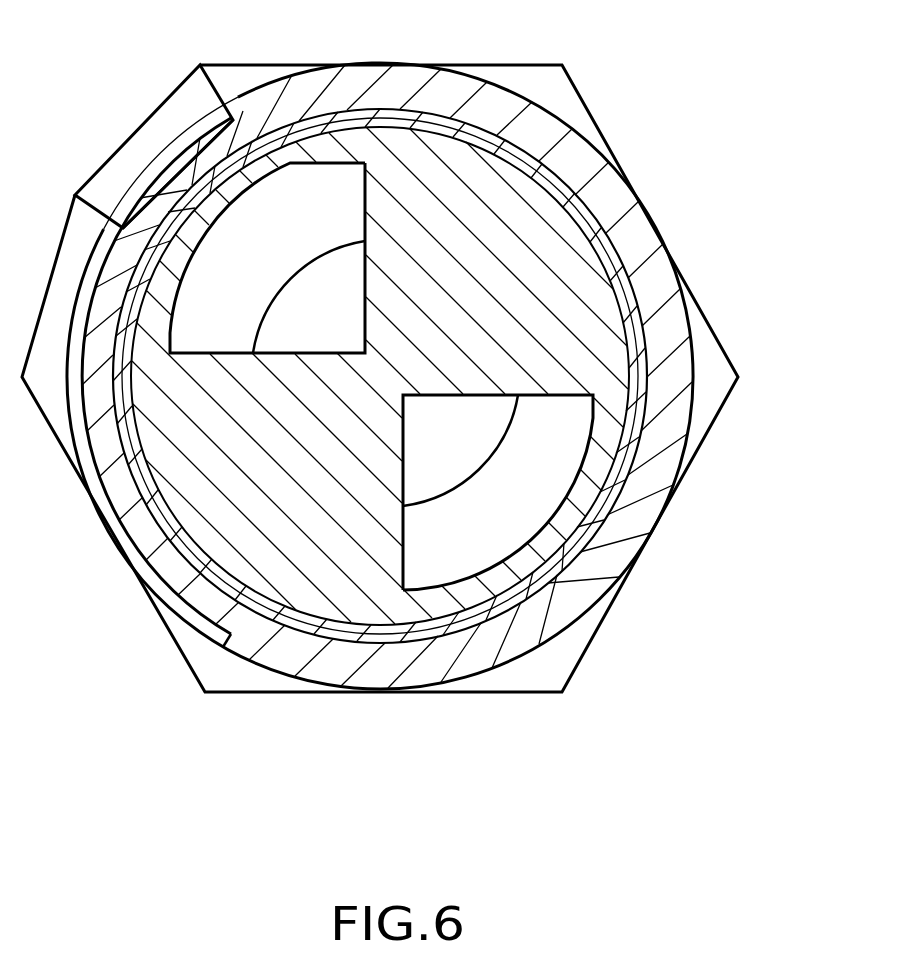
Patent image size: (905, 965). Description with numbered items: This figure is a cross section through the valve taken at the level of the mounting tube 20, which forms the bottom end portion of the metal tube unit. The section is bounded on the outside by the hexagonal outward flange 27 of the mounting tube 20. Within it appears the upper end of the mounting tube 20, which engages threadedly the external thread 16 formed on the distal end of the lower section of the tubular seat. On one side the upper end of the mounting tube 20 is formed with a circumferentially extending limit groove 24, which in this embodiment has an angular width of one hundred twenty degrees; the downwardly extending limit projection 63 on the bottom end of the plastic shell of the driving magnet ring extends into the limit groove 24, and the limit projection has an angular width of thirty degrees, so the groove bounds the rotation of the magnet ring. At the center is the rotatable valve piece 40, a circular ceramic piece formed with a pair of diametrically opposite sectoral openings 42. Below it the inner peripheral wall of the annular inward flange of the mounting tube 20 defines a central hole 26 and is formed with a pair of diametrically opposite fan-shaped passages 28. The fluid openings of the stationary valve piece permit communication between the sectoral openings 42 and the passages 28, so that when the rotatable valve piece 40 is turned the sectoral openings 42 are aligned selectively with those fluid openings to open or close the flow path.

The mounting tube 20 is at (190, 629).
The hexagonal outward flange 27 is at (230, 683).
The limit groove 24 is at (103, 245).
The limit projection 63 is at (178, 93).
The external thread 16 is at (645, 381).
The fan-shaped passages 28 is at (570, 452).
The rotatable valve piece 40 is at (556, 260).
The sectoral openings 42 is at (336, 178).
The central hole 26 is at (498, 420).